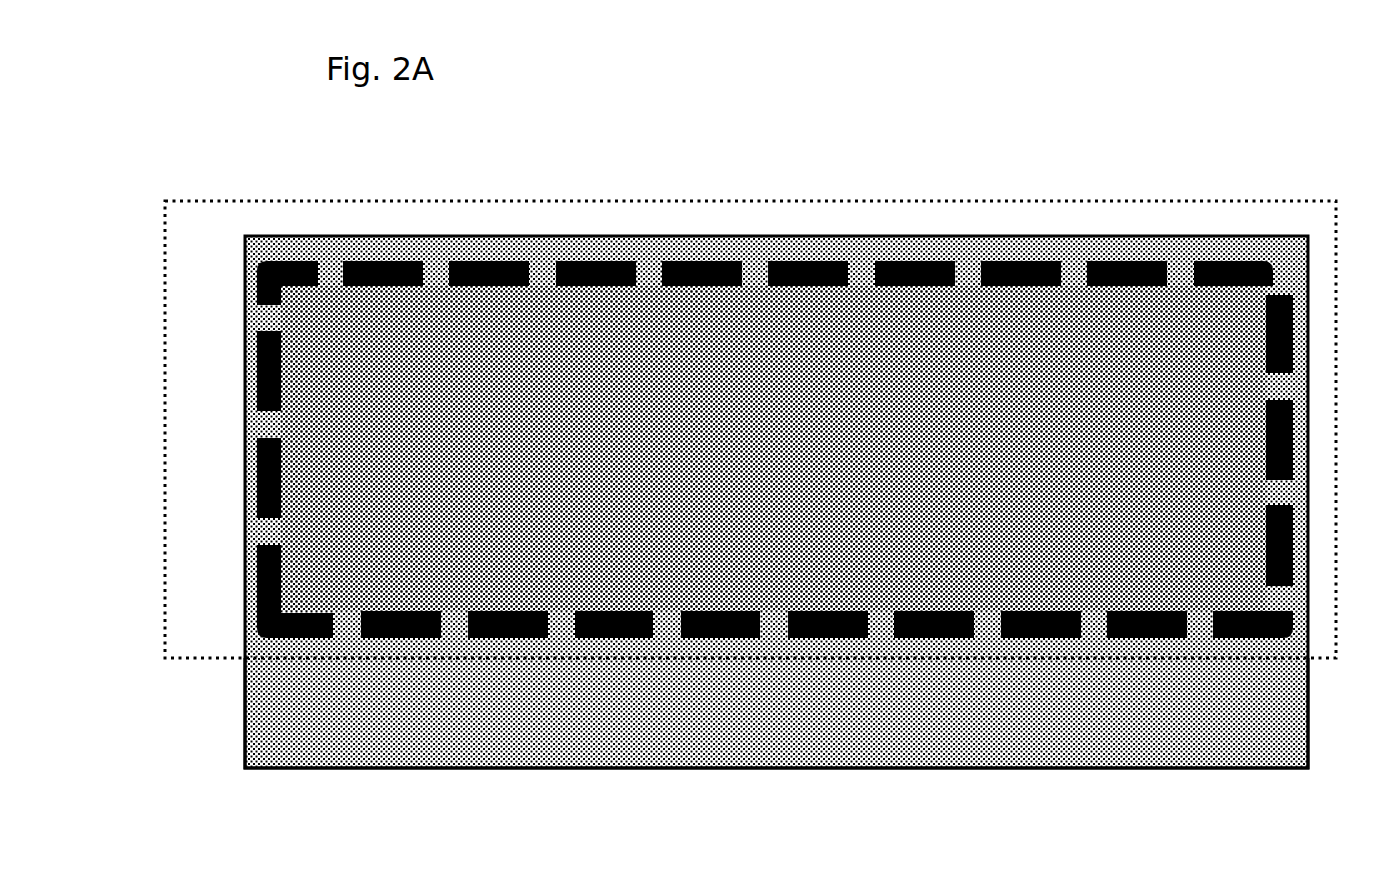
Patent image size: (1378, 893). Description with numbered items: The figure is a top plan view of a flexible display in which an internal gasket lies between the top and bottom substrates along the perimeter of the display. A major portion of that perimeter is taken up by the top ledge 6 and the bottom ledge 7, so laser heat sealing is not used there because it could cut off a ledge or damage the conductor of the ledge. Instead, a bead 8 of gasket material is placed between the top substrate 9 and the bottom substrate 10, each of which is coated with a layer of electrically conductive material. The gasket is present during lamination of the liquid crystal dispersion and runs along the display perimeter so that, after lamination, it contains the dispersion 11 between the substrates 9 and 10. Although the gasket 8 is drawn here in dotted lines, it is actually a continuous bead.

The top ledge 6 is at (230, 185).
The bottom ledge 7 is at (1310, 656).
The bead of gasket material 8 is at (915, 630).
The top substrate 9 is at (1102, 190).
The bottom substrate 10 is at (1241, 222).
The dispersion 11 is at (878, 442).